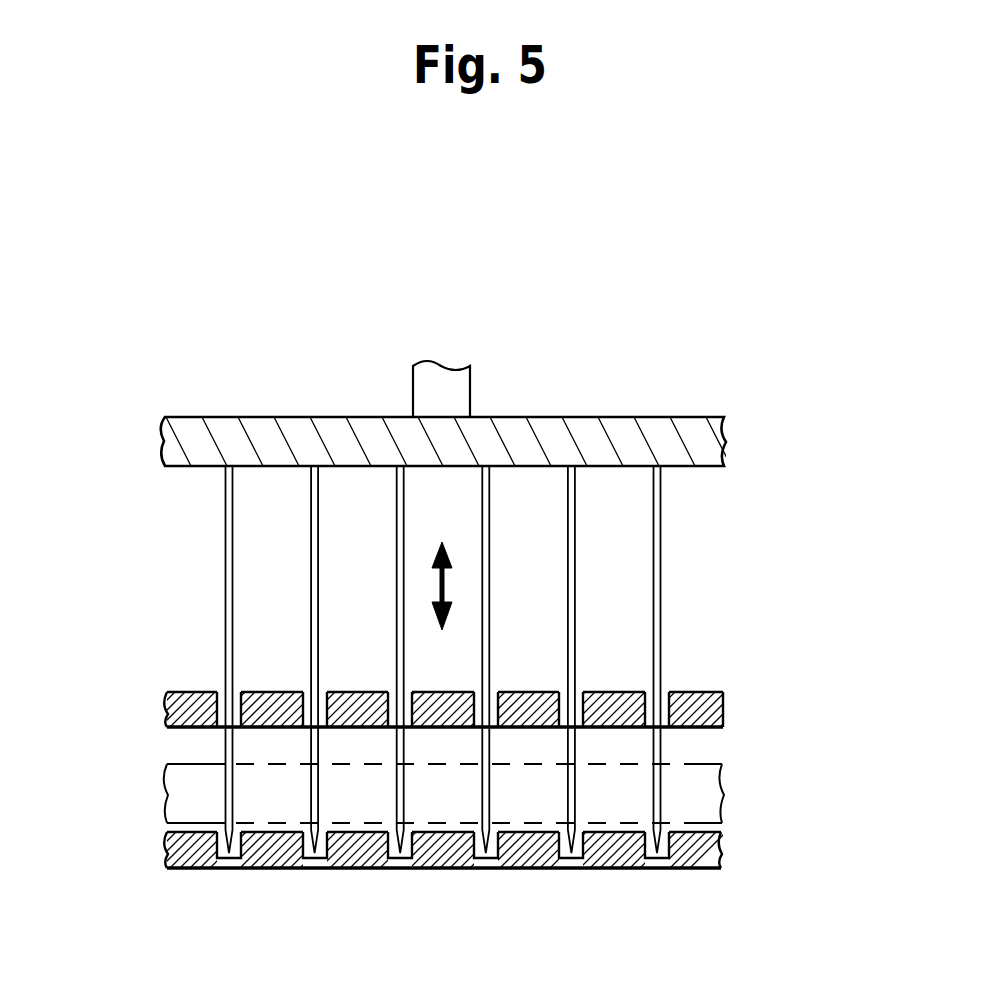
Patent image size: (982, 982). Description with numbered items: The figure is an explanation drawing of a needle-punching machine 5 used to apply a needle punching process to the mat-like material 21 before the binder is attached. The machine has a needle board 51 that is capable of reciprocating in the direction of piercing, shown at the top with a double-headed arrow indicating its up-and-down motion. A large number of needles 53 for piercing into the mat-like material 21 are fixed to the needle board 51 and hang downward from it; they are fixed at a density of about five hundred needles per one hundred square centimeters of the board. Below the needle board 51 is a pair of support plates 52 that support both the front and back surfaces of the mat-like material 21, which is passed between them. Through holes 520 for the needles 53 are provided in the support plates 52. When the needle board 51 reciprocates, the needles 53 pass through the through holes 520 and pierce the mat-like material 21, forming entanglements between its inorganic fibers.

The needle-punching machine 5 is at (507, 373).
The needle board 51 is at (683, 450).
The needles 53 is at (226, 553).
The support plates 52 is at (700, 708).
The through holes 520 is at (220, 692).
The mat-like material 21 is at (728, 798).